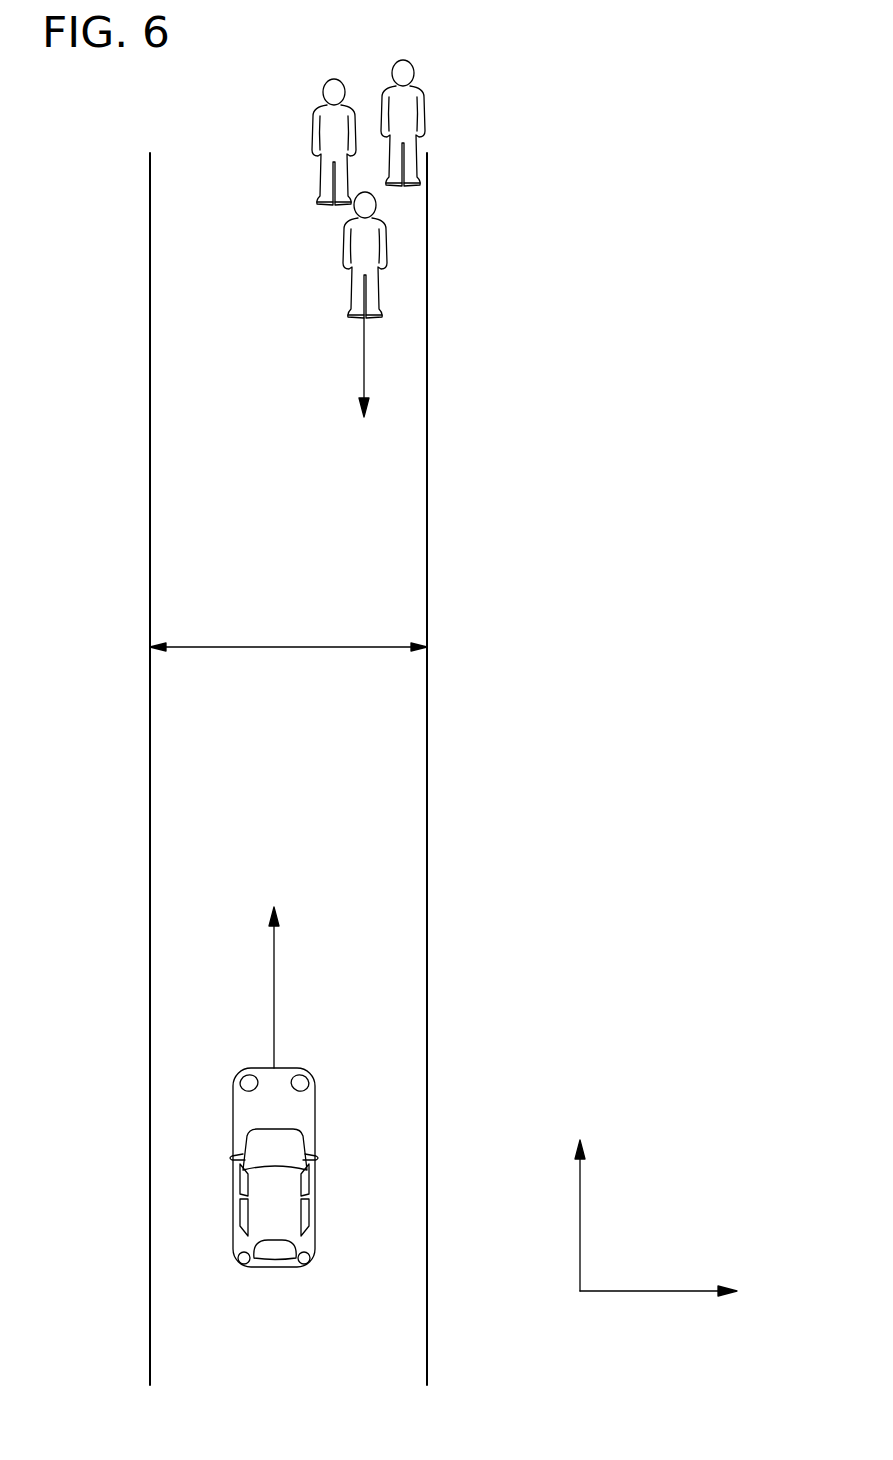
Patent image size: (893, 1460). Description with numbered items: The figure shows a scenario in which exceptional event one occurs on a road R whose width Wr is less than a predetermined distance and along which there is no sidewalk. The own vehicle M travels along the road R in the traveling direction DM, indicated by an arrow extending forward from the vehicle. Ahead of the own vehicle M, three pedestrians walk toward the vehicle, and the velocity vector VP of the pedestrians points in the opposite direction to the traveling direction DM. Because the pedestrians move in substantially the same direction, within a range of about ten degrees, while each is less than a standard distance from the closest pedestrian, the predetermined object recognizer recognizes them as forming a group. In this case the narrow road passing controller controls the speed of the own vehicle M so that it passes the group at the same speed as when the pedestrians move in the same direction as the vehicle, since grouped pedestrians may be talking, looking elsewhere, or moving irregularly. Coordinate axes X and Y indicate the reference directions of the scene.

The velocity vector of pedestrian VP is at (365, 361).
The traveling direction of own vehicle DM is at (274, 995).
The own vehicle M is at (234, 1192).
The width of road Wr is at (288, 630).
The road R is at (297, 1358).
The X axis X is at (582, 1199).
The Y axis Y is at (672, 1292).